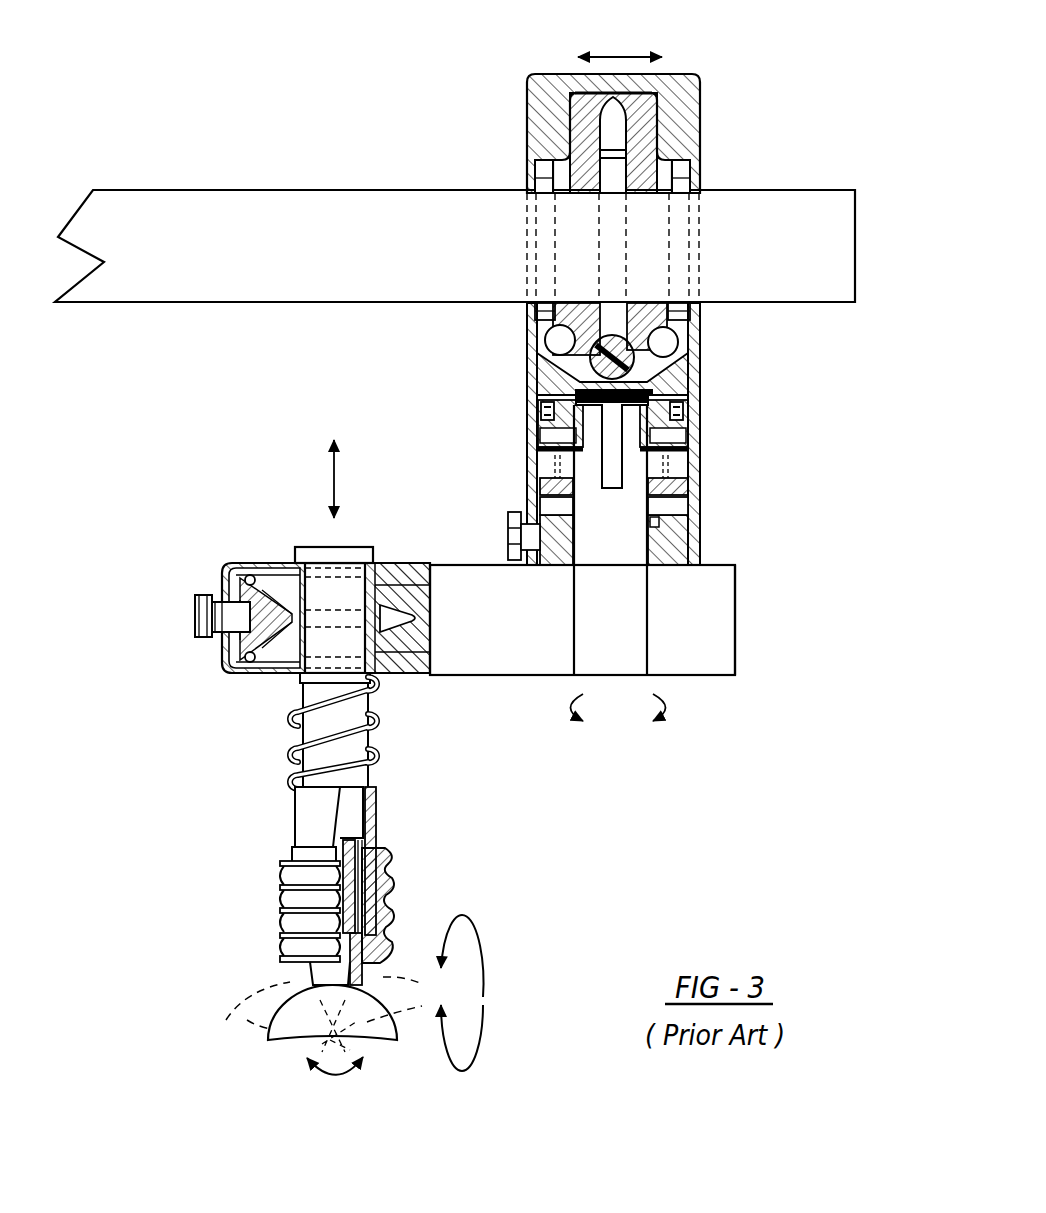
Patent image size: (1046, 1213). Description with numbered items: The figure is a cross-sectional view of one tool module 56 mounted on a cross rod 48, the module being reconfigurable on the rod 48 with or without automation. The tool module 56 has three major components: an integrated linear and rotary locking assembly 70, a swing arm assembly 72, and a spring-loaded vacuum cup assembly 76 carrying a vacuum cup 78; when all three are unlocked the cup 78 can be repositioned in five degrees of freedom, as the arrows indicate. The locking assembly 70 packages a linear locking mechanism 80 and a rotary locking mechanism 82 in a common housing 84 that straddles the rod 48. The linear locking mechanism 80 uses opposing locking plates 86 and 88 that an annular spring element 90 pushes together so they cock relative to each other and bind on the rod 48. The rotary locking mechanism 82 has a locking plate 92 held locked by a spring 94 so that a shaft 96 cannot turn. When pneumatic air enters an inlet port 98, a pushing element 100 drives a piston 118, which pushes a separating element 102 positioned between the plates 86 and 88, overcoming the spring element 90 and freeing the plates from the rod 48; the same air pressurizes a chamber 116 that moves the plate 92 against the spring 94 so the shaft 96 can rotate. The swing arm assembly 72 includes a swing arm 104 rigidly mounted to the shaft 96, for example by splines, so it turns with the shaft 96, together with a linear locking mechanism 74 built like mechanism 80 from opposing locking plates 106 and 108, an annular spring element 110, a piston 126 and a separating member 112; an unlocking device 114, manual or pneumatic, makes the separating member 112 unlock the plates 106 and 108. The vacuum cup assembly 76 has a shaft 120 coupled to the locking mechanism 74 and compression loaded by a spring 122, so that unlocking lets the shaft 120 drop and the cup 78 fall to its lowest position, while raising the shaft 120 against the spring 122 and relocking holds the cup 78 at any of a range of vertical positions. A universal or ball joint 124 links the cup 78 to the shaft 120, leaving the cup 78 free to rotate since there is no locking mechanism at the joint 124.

The cross rod 48 is at (232, 236).
The tool module 56 is at (200, 463).
The integrated linear and rotary locking assembly 70 is at (702, 487).
The swing arm assembly 72 is at (738, 622).
The linear locking mechanism 74 is at (238, 537).
The spring-loaded vacuum cup assembly 76 is at (273, 823).
The vacuum cup 78 is at (400, 1034).
The linear locking mechanism 80 is at (731, 133).
The rotary locking mechanism 82 is at (708, 447).
The common housing 84 is at (537, 97).
The locking plate 86 is at (570, 177).
The locking plate 88 is at (645, 173).
The annular spring element 90 is at (553, 333).
The locking plate 92 is at (543, 487).
The spring 94 is at (540, 462).
The shaft 96 is at (632, 645).
The inlet port 98 is at (508, 538).
The pushing element 100 is at (645, 530).
The separating element 102 is at (660, 366).
The swing arm 104 is at (530, 650).
The locking plate 106 is at (397, 595).
The locking plate 108 is at (424, 676).
The annular spring element 110 is at (290, 562).
The separating member 112 is at (250, 632).
The unlocking device 114 is at (200, 618).
The chamber 116 is at (673, 508).
The piston 118 is at (700, 418).
The shaft 120 is at (357, 808).
The spring 122 is at (385, 745).
The ball joint 124 is at (380, 905).
The piston 126 is at (230, 580).